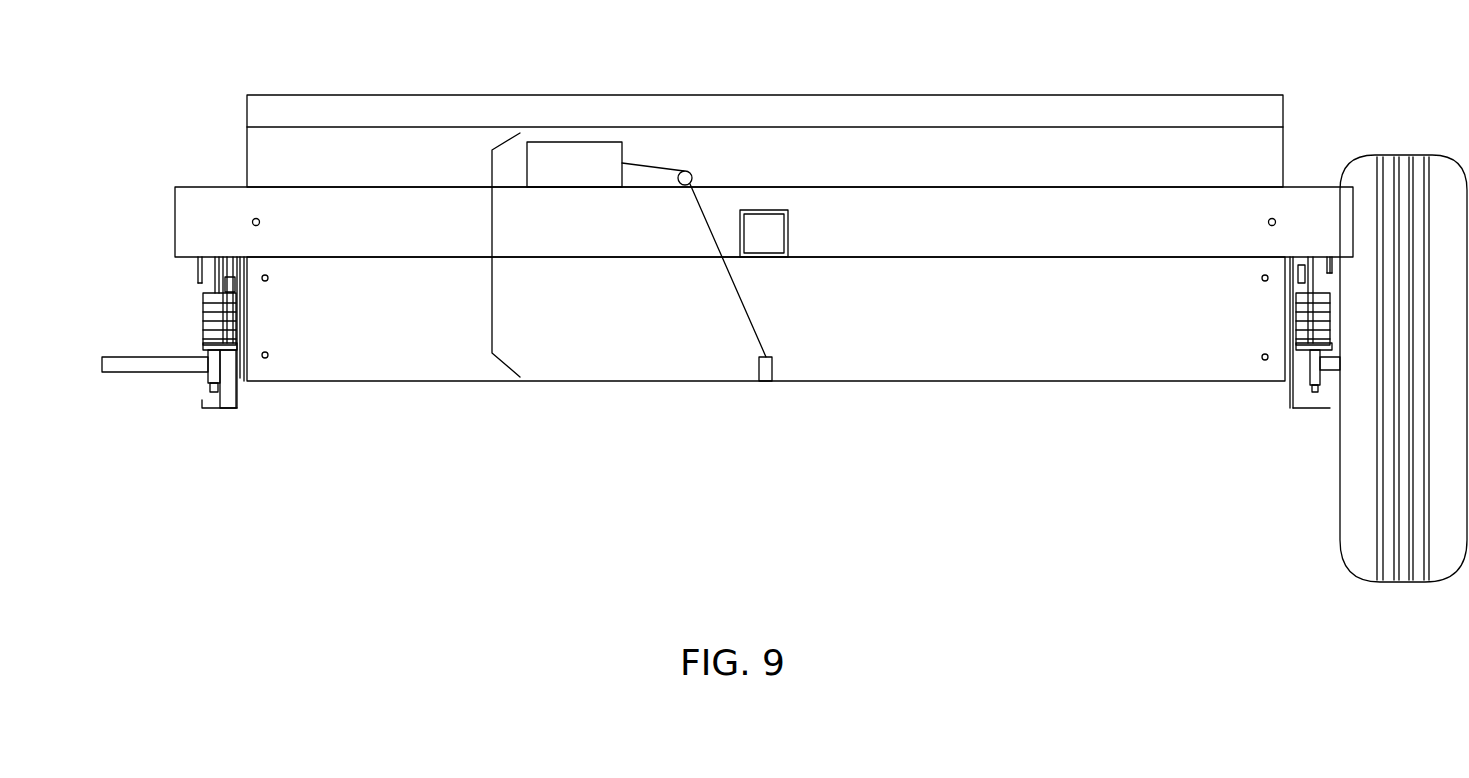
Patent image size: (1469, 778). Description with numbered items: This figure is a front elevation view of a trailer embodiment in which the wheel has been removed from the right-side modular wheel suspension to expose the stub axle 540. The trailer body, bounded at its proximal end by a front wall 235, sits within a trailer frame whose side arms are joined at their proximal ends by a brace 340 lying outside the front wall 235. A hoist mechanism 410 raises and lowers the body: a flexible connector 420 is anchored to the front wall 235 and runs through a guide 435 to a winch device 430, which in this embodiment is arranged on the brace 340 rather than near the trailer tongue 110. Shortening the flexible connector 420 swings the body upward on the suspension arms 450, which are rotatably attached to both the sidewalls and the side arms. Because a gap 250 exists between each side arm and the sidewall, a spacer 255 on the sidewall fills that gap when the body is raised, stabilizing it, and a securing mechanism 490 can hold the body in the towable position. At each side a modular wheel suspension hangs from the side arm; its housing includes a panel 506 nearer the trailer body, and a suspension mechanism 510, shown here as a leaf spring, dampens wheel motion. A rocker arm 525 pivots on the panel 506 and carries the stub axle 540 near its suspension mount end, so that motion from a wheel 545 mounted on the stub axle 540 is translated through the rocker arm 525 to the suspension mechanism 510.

The trailer tongue 110 is at (853, 324).
The front wall 235 is at (766, 118).
The gap 250 is at (284, 314).
The spacer 255 is at (279, 300).
The brace 340 is at (766, 216).
The hoist mechanism 410 is at (492, 283).
The flexible connector 420 is at (678, 313).
The winch device 430 is at (670, 113).
The guide 435 is at (781, 124).
The suspension arm 450 is at (1234, 332).
The securing mechanism 490 is at (1223, 309).
The panel 506 is at (286, 413).
The suspension mechanism 510 is at (181, 316).
The rocker arm 525 is at (764, 428).
The stub axle 540 is at (721, 445).
The wheel 545 is at (1332, 368).